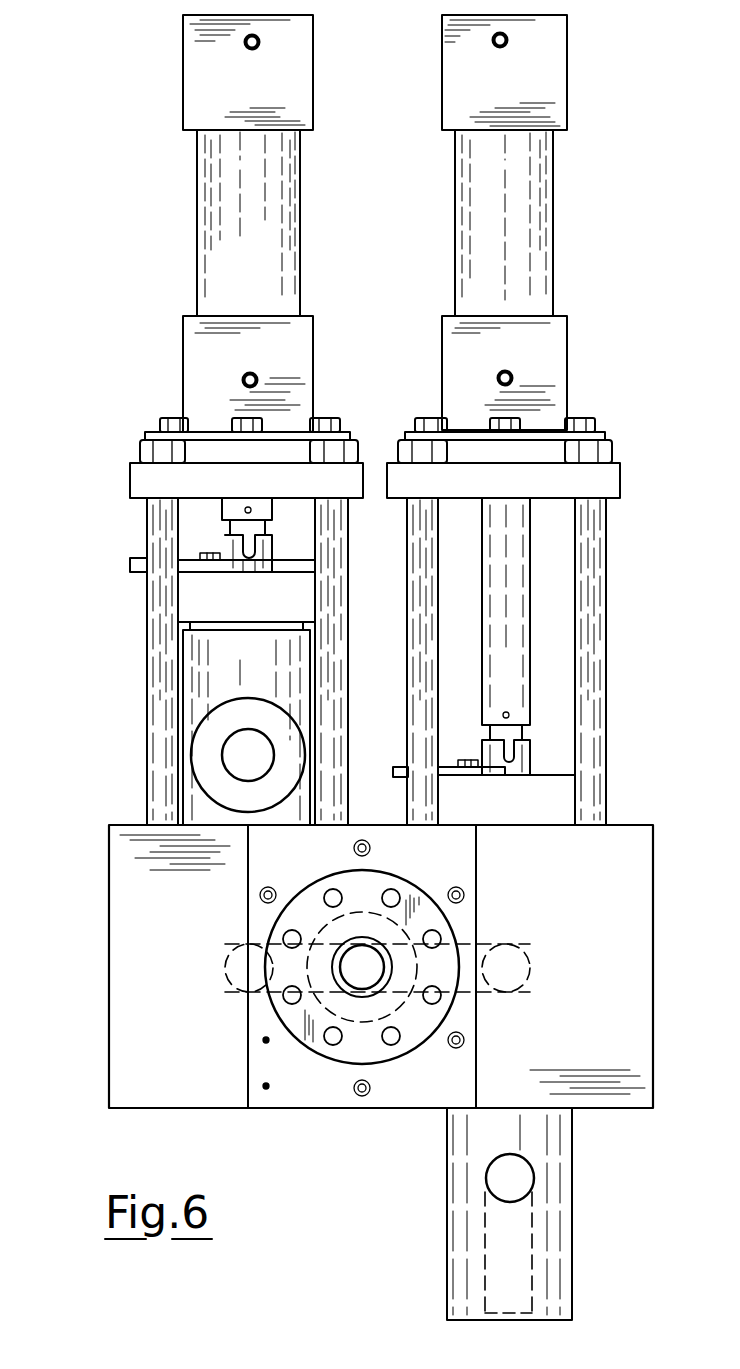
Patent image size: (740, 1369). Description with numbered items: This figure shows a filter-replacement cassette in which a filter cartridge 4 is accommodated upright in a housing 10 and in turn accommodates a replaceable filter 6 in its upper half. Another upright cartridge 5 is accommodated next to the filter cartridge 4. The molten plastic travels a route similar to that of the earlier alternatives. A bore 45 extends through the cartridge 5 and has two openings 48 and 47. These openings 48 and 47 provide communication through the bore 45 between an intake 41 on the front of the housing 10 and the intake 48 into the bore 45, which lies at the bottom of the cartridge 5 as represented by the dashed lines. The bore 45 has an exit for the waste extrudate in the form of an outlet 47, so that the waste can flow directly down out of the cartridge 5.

The filter cartridge 4 is at (200, 670).
The cartridge 5 is at (556, 797).
The replaceable filter 6 is at (290, 748).
The housing 10 is at (108, 910).
The intake 41 is at (358, 975).
The bore 45 is at (485, 1232).
The outlet 47 is at (497, 1316).
The opening 48 is at (516, 1188).